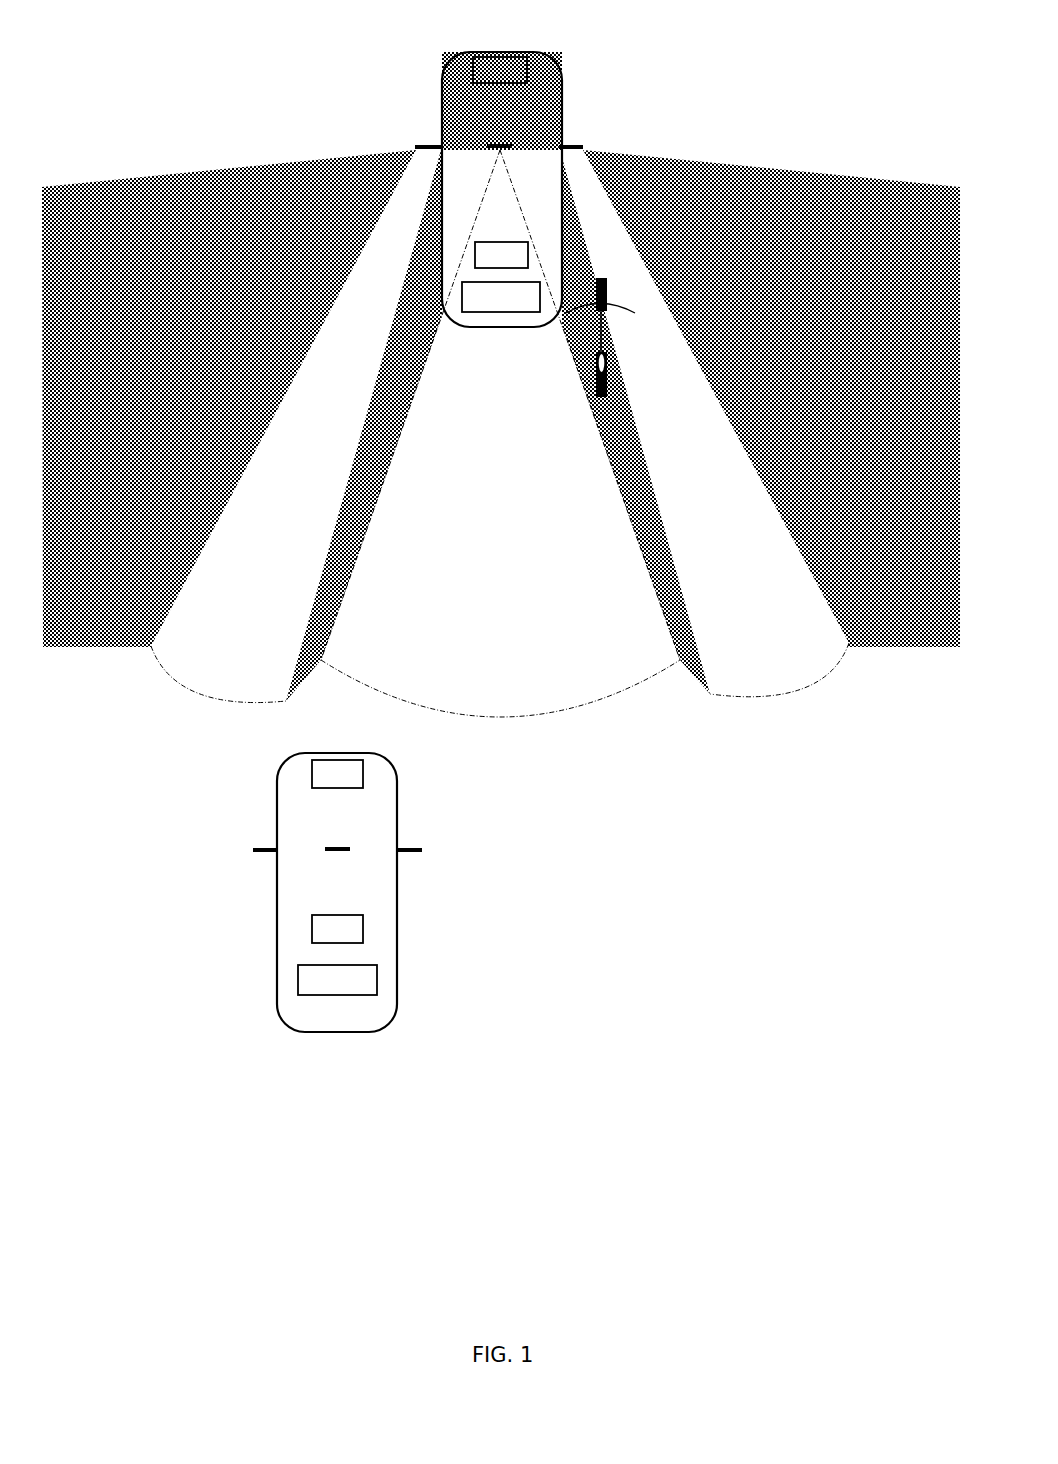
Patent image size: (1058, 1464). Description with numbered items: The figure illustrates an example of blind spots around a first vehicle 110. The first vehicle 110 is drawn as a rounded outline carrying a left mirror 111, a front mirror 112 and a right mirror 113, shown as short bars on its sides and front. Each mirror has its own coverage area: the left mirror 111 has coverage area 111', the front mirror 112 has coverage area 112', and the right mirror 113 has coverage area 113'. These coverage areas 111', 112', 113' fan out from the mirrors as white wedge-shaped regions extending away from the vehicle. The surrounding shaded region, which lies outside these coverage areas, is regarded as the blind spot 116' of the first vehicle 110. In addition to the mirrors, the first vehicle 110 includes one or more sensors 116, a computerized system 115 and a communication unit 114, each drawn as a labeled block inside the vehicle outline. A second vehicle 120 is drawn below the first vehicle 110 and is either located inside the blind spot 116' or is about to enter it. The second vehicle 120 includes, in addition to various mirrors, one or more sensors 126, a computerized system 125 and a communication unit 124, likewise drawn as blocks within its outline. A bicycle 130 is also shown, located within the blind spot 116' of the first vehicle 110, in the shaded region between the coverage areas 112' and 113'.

The first vehicle 110 is at (548, 113).
The left mirror 111 is at (414, 135).
The front mirror 112 is at (484, 131).
The right mirror 113 is at (590, 135).
The communication unit 114 is at (482, 308).
The computerized system 115 is at (482, 266).
The sensors 116 is at (500, 70).
The coverage area 111' is at (296, 426).
The coverage area 112' is at (500, 433).
The coverage area 113' is at (704, 423).
The blind spot 116' is at (501, 376).
The second vehicle 120 is at (359, 827).
The communication unit 124 is at (318, 991).
The computerized system 125 is at (318, 940).
The sensors 126 is at (318, 785).
The bicycle 130 is at (618, 337).